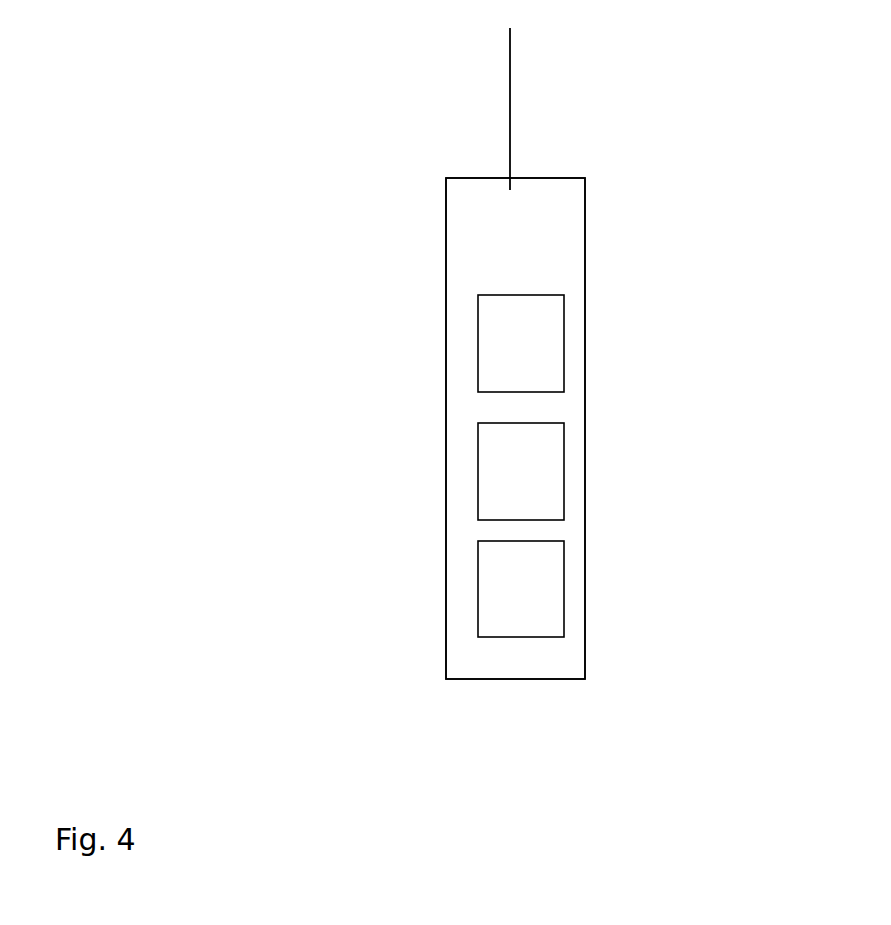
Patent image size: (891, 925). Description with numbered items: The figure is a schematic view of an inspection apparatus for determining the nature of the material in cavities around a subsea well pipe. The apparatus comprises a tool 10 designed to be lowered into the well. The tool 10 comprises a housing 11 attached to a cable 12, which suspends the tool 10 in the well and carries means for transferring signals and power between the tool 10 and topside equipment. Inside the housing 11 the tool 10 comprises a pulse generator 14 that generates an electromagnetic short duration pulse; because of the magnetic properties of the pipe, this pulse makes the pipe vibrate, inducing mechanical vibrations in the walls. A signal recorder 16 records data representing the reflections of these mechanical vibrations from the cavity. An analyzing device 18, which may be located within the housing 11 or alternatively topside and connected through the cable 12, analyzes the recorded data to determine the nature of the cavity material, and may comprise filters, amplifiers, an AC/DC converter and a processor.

The tool 10 is at (732, 334).
The housing 11 is at (585, 594).
The cable 12 is at (512, 145).
The pulse generator 14 is at (552, 328).
The signal recorder 16 is at (547, 477).
The analyzing device 18 is at (542, 615).